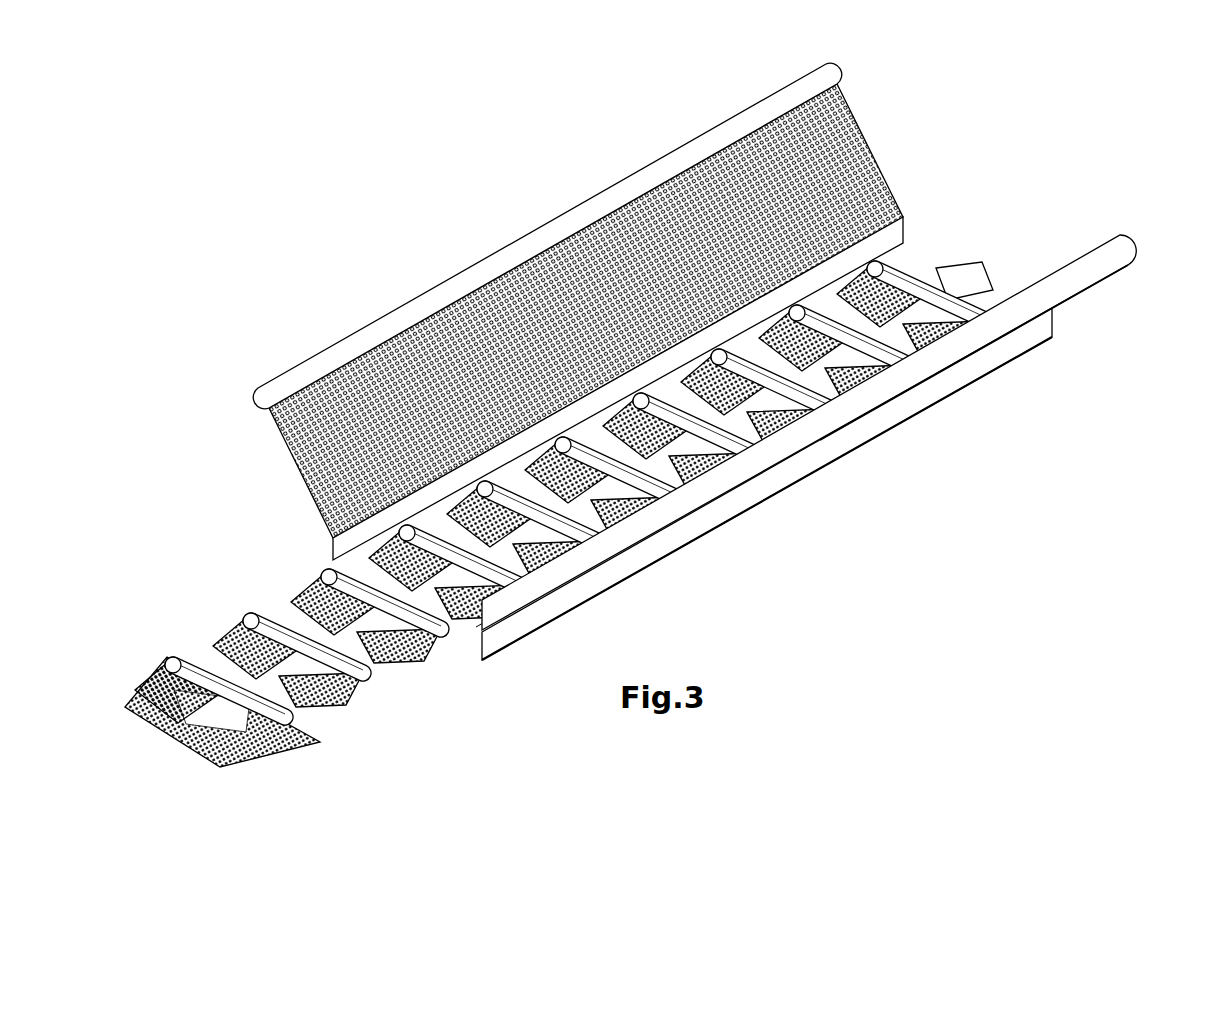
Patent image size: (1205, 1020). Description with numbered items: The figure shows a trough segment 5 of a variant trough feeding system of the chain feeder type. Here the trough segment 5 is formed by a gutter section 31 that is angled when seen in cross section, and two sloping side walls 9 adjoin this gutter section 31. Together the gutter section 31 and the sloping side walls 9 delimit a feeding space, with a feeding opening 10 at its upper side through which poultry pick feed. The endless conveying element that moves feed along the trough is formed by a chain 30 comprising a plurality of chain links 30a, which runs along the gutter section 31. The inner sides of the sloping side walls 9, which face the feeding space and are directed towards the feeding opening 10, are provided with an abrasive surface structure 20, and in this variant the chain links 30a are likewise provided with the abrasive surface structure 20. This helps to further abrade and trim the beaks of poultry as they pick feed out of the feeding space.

The trough segment 5 is at (630, 443).
The sloping side walls 9 is at (515, 237).
The feeding opening 10 is at (620, 360).
The abrasive surface structure 20 is at (352, 383).
The chain 30 is at (560, 544).
The chain links 30a is at (334, 713).
The gutter section 31 is at (680, 536).